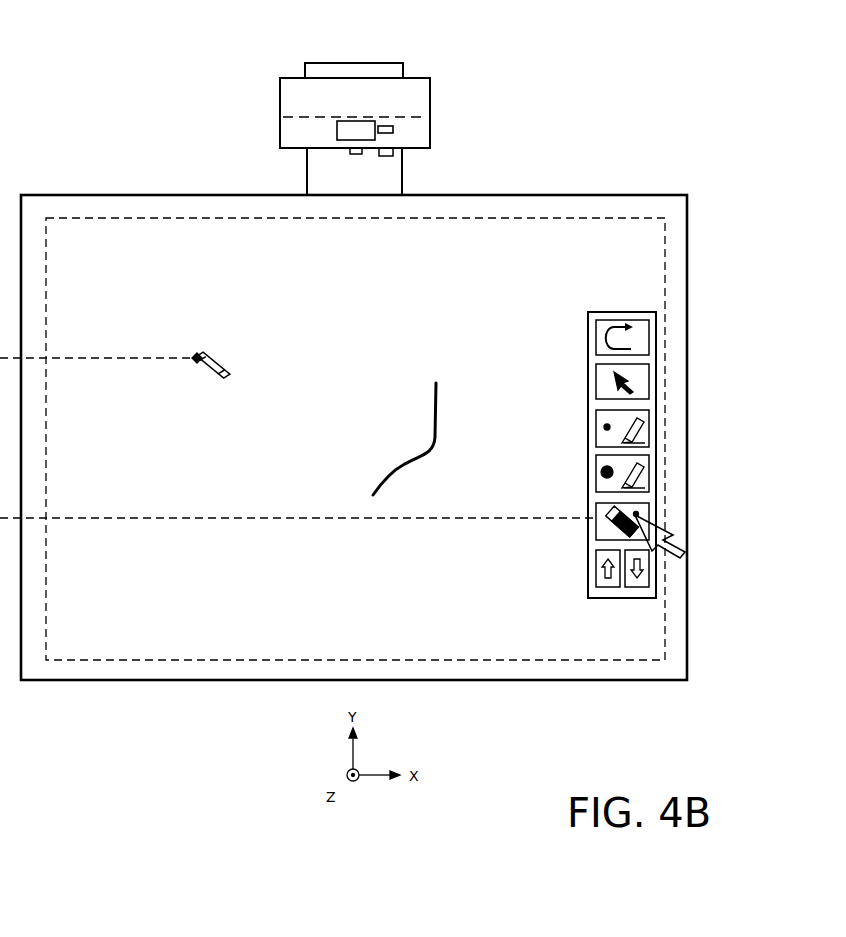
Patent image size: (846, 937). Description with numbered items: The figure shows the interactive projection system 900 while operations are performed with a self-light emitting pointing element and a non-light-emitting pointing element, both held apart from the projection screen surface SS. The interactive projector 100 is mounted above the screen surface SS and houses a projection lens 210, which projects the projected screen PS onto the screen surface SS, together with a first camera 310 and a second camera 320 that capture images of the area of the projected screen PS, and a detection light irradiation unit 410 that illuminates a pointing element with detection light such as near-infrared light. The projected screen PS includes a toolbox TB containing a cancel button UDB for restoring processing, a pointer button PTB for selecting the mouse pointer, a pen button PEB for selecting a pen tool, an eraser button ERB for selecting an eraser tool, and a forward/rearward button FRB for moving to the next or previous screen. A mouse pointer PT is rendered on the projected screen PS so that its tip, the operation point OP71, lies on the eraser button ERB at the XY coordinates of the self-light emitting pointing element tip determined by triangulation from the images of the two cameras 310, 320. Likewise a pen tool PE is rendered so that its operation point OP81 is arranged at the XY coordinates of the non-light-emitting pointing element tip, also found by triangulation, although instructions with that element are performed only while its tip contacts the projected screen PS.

The interactive projection system 900 is at (660, 95).
The interactive projector 100 is at (433, 95).
The projection lens 210 is at (337, 130).
The first camera 310 is at (393, 130).
The second camera 320 is at (402, 150).
The detection light irradiation unit 410 is at (338, 152).
The projection screen surface SS is at (82, 199).
The projected screen PS is at (164, 218).
The operation point of the pen tool OP81 is at (199, 355).
The pen tool PE is at (223, 368).
The toolbox TB is at (600, 312).
The cancel button UDB is at (596, 336).
The pointer button PTB is at (596, 379).
The pen button PEB is at (596, 470).
The eraser button ERB is at (596, 516).
The forward/rearward button FRB is at (596, 568).
The operation point of the mouse pointer OP71 is at (638, 513).
The mouse pointer PT is at (683, 554).